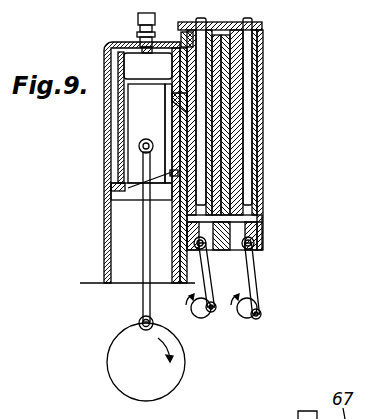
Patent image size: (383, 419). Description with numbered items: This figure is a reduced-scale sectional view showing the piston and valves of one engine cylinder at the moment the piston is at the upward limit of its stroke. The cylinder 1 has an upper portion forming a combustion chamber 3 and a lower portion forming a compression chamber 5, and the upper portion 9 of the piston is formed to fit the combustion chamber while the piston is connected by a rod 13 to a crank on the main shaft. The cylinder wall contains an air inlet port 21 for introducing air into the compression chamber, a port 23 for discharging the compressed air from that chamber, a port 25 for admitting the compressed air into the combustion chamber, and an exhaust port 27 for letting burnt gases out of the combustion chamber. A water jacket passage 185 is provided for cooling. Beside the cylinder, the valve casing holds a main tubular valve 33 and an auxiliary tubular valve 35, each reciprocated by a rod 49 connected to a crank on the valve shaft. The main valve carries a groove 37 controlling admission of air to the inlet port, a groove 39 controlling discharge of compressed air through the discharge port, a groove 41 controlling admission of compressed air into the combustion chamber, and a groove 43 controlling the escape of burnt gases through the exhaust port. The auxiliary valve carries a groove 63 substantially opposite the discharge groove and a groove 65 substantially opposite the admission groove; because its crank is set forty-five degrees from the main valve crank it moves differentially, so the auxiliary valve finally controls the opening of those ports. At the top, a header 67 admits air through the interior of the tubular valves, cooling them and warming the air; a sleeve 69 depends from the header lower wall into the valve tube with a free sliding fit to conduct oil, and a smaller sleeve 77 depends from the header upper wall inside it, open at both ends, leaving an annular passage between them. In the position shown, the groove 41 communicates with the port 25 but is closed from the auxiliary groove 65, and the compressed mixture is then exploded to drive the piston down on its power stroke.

The cylinder 1 is at (105, 133).
The combustion chamber 3 is at (125, 66).
The compression chamber 5 is at (105, 224).
The upper portion of piston 9 is at (123, 103).
The rod 13 is at (143, 299).
The air inlet port 21 is at (180, 207).
The port 23 is at (110, 196).
The port 25 is at (183, 78).
The exhaust port 27 is at (170, 103).
The main tubular valve 33 is at (235, 130).
The auxiliary tubular valve 35 is at (258, 97).
The groove 37 is at (232, 190).
The groove 39 is at (228, 152).
The groove 41 is at (228, 73).
The groove 43 is at (228, 111).
The rod 49 is at (209, 278).
The groove 63 is at (262, 165).
The groove 65 is at (255, 83).
The header 67 is at (190, 27).
The sleeve 69 is at (218, 27).
The sleeve 77 is at (203, 22).
The water jacket passage 185 is at (107, 163).